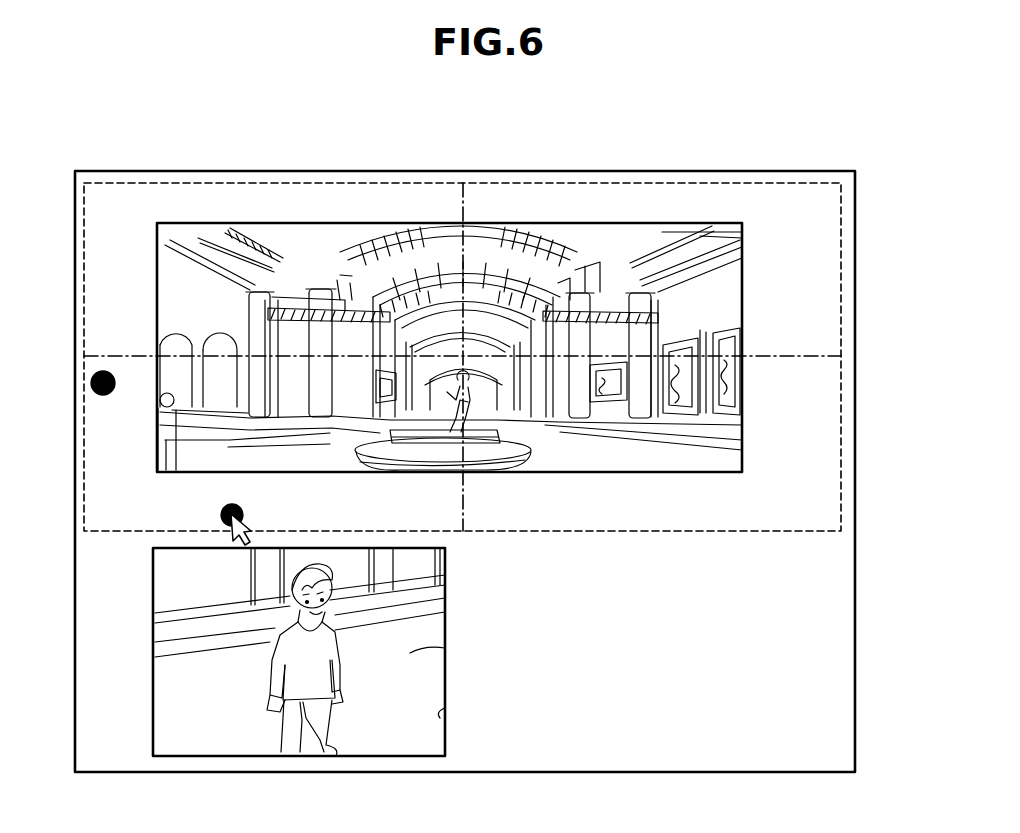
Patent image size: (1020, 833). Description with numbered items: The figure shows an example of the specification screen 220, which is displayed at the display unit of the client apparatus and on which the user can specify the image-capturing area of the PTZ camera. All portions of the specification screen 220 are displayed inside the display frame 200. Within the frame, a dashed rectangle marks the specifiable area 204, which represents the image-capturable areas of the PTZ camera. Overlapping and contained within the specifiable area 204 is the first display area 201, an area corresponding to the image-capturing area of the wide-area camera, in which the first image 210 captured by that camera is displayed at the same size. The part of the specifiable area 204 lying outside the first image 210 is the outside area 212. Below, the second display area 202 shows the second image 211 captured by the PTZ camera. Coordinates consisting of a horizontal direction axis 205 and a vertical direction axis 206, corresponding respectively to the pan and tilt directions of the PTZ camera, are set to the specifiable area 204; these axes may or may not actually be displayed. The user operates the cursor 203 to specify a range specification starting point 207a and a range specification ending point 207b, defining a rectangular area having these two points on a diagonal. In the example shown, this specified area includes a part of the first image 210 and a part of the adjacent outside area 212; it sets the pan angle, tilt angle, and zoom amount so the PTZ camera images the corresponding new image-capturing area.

The display frame 200 is at (678, 771).
The first display area 201 is at (672, 473).
The second display area 202 is at (445, 714).
The cursor 203 is at (243, 516).
The specifiable area 204 is at (688, 532).
The horizontal direction axis 205 is at (812, 358).
The vertical direction axis 206 is at (463, 207).
The range specification starting point 207a is at (103, 395).
The range specification ending point 207b is at (221, 515).
The first image 210 is at (725, 292).
The second image 211 is at (412, 660).
The outside area 212 is at (800, 452).
The specification screen 220 is at (686, 162).